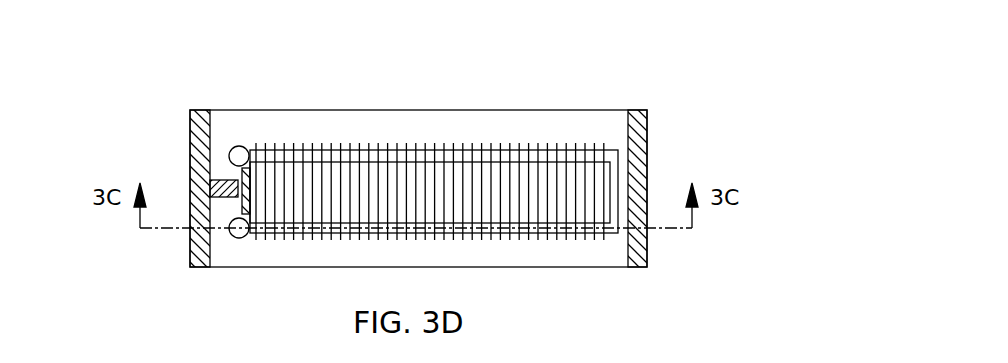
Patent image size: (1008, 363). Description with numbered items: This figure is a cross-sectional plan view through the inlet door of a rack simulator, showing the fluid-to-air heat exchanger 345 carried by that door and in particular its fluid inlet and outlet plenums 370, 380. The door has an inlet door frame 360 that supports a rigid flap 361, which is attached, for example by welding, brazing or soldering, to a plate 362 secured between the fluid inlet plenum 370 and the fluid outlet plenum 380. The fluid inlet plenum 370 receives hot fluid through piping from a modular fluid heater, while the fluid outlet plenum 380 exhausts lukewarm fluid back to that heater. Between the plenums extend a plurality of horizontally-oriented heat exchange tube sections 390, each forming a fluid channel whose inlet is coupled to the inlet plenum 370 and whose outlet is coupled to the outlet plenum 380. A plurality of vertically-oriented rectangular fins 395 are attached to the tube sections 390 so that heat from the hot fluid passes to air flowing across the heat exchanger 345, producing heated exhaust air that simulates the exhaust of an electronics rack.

The fluid-to-air heat exchanger 345 is at (618, 150).
The inlet door frame 360 is at (196, 121).
The rigid flap 361 is at (222, 180).
The plate 362 is at (238, 198).
The fluid inlet plenum 370 is at (238, 238).
The fluid outlet plenum 380 is at (236, 147).
The heat exchange tube sections 390 is at (612, 185).
The fins 395 is at (562, 147).